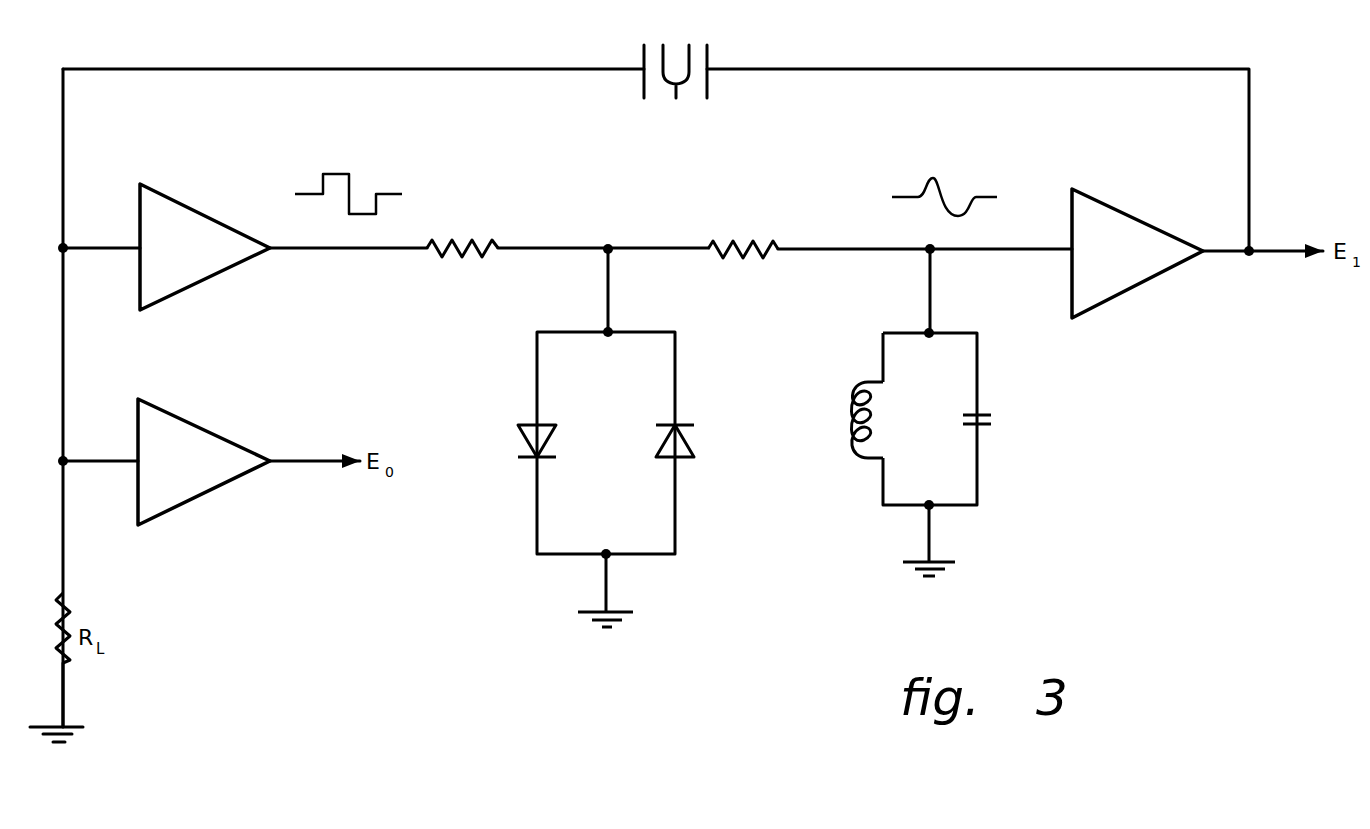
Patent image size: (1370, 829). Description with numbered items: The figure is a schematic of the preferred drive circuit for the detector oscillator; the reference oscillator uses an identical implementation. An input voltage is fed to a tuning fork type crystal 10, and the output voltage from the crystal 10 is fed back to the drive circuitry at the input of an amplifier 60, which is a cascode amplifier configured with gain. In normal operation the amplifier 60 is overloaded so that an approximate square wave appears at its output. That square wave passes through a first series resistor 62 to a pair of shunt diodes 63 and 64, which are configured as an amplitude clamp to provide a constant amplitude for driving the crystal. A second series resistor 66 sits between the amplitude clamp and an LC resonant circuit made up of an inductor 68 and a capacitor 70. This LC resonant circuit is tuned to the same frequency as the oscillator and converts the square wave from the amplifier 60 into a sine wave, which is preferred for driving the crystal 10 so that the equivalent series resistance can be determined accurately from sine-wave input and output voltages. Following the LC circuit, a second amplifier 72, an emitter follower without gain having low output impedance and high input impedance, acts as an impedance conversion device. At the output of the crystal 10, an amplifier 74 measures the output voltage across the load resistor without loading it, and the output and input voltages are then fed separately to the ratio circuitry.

The tuning fork type crystal 10 is at (707, 80).
The amplifier 60 is at (205, 275).
The first series resistor 62 is at (462, 245).
The shunt diode 63 is at (548, 425).
The shunt diode 64 is at (690, 445).
The second series resistor 66 is at (750, 245).
The inductor 68 is at (852, 428).
The capacitor 70 is at (980, 425).
The second amplifier 72 is at (1150, 222).
The amplifier 74 is at (203, 495).